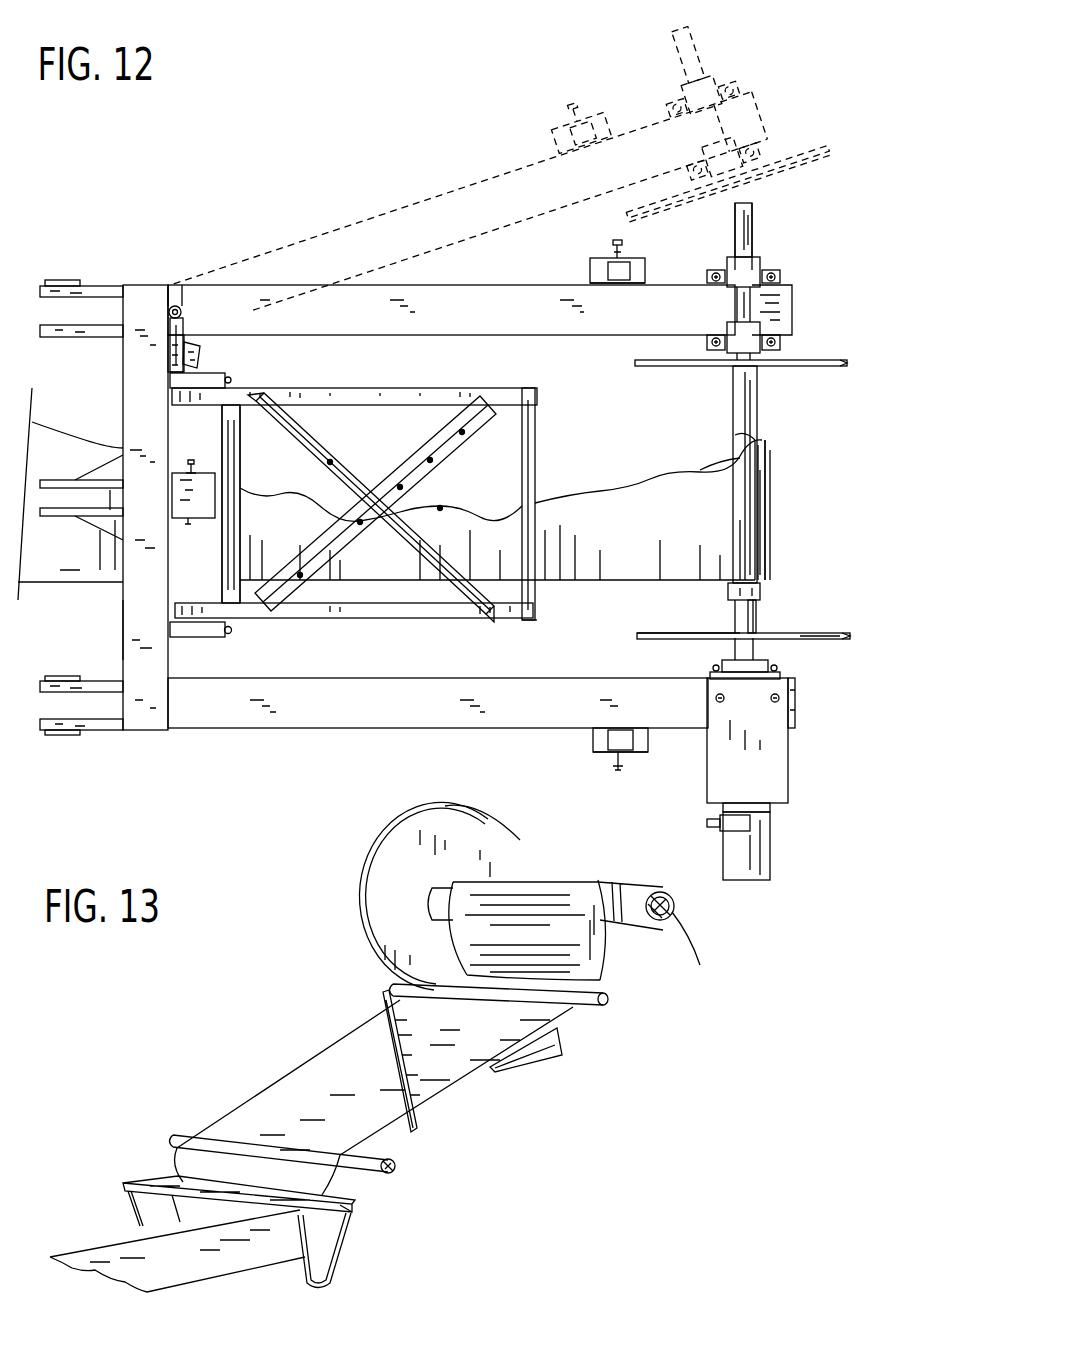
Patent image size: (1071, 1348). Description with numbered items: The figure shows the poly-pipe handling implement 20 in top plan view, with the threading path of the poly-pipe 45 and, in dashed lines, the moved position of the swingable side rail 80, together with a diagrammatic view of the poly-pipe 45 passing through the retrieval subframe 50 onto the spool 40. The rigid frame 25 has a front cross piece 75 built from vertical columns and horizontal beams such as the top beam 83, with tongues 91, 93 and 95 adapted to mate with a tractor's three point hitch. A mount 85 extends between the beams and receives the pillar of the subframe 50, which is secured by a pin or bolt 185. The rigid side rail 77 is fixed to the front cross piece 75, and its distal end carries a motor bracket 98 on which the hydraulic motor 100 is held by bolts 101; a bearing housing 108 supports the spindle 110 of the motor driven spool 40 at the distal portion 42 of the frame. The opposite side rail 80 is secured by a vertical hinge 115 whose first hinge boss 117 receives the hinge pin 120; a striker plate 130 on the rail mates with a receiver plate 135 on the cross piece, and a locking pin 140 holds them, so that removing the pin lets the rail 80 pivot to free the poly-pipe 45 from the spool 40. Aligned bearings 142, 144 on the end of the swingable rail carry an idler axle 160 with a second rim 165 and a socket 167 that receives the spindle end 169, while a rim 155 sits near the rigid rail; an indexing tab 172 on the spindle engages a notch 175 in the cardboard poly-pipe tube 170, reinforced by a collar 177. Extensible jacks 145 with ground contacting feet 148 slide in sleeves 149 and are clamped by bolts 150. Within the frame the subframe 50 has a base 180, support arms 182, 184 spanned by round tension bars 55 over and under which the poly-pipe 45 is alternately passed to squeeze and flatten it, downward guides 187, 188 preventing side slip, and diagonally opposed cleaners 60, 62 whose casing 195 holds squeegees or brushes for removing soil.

In FIG. 12, the poly-pipe handling implement 20 is at (255, 123).
In FIG. 13, the poly-pipe handling implement 20 is at (208, 961).
In FIG. 12, the rigid frame 25 is at (145, 544).
In FIG. 12, the motor driven spool 40 is at (786, 472).
In FIG. 13, the motor driven spool 40 is at (372, 812).
In FIG. 12, the distal portion of the frame 42 is at (686, 282).
In FIG. 12, the poly-pipe 45 is at (98, 550).
In FIG. 13, the poly-pipe 45 is at (564, 944).
In FIG. 12, the poly-pipe retrieval subframe 50 is at (500, 640).
In FIG. 12, the tension bars 55 is at (241, 455).
In FIG. 13, the tension bars 55 is at (598, 1007).
In FIG. 12, the cleaner 60 is at (442, 470).
In FIG. 13, the cleaner 60 is at (522, 1072).
In FIG. 12, the cleaner 62 is at (326, 486).
In FIG. 13, the cleaner 62 is at (378, 1013).
In FIG. 12, the front cross piece 75 is at (98, 606).
In FIG. 12, the rigid side rail 77 is at (332, 705).
In FIG. 12, the swingable side rail 80 is at (378, 305).
In FIG. 12, the top beam 83 is at (148, 625).
In FIG. 12, the mount 85 is at (203, 522).
In FIG. 12, the tongue 91 is at (58, 468).
In FIG. 12, the tongue 93 is at (63, 268).
In FIG. 12, the tongue 95 is at (88, 750).
In FIG. 12, the motor bracket 98 is at (760, 746).
In FIG. 12, the hydraulic motor 100 is at (760, 851).
In FIG. 12, the bolts 101 is at (750, 822).
In FIG. 12, the bearing housing 108 is at (728, 656).
In FIG. 12, the spindle 110 is at (735, 402).
In FIG. 13, the spindle 110 is at (703, 952).
In FIG. 12, the vertical hinge 115 is at (172, 268).
In FIG. 12, the first hinge boss 117 is at (181, 300).
In FIG. 12, the hinge pin 120 is at (168, 313).
In FIG. 12, the striker plate 130 is at (192, 338).
In FIG. 12, the receiver plate 135 is at (168, 340).
In FIG. 12, the locking pin 140 is at (199, 362).
In FIG. 12, the bearing 142 is at (757, 268).
In FIG. 12, the bearing 144 is at (760, 335).
In FIG. 12, the extensible jack 145 is at (585, 252).
In FIG. 12, the ground contacting foot 148 is at (592, 272).
In FIG. 12, the sleeve 149 is at (620, 283).
In FIG. 12, the clamping bolt 150 is at (620, 242).
In FIG. 12, the rim 155 is at (780, 632).
In FIG. 12, the idler axle 160 is at (748, 225).
In FIG. 12, the second rim 165 is at (812, 370).
In FIG. 13, the second rim 165 is at (378, 885).
In FIG. 12, the socket 167 is at (720, 361).
In FIG. 12, the spindle end 169 is at (752, 375).
In FIG. 12, the poly-pipe tube 170 is at (732, 392).
In FIG. 13, the poly-pipe tube 170 is at (438, 890).
In FIG. 12, the indexing tab 172 is at (757, 610).
In FIG. 12, the notch 175 is at (740, 630).
In FIG. 12, the reinforcing collar 177 is at (760, 590).
In FIG. 12, the base 180 is at (192, 600).
In FIG. 13, the base 180 is at (352, 1210).
In FIG. 12, the support arm 182 is at (376, 392).
In FIG. 12, the support arm 184 is at (372, 615).
In FIG. 12, the pin or bolt 185 is at (190, 458).
In FIG. 12, the guide 187 is at (232, 631).
In FIG. 13, the guide 187 is at (135, 1211).
In FIG. 12, the guide 188 is at (232, 379).
In FIG. 13, the guide 188 is at (302, 1282).
In FIG. 12, the casing 195 is at (335, 460).